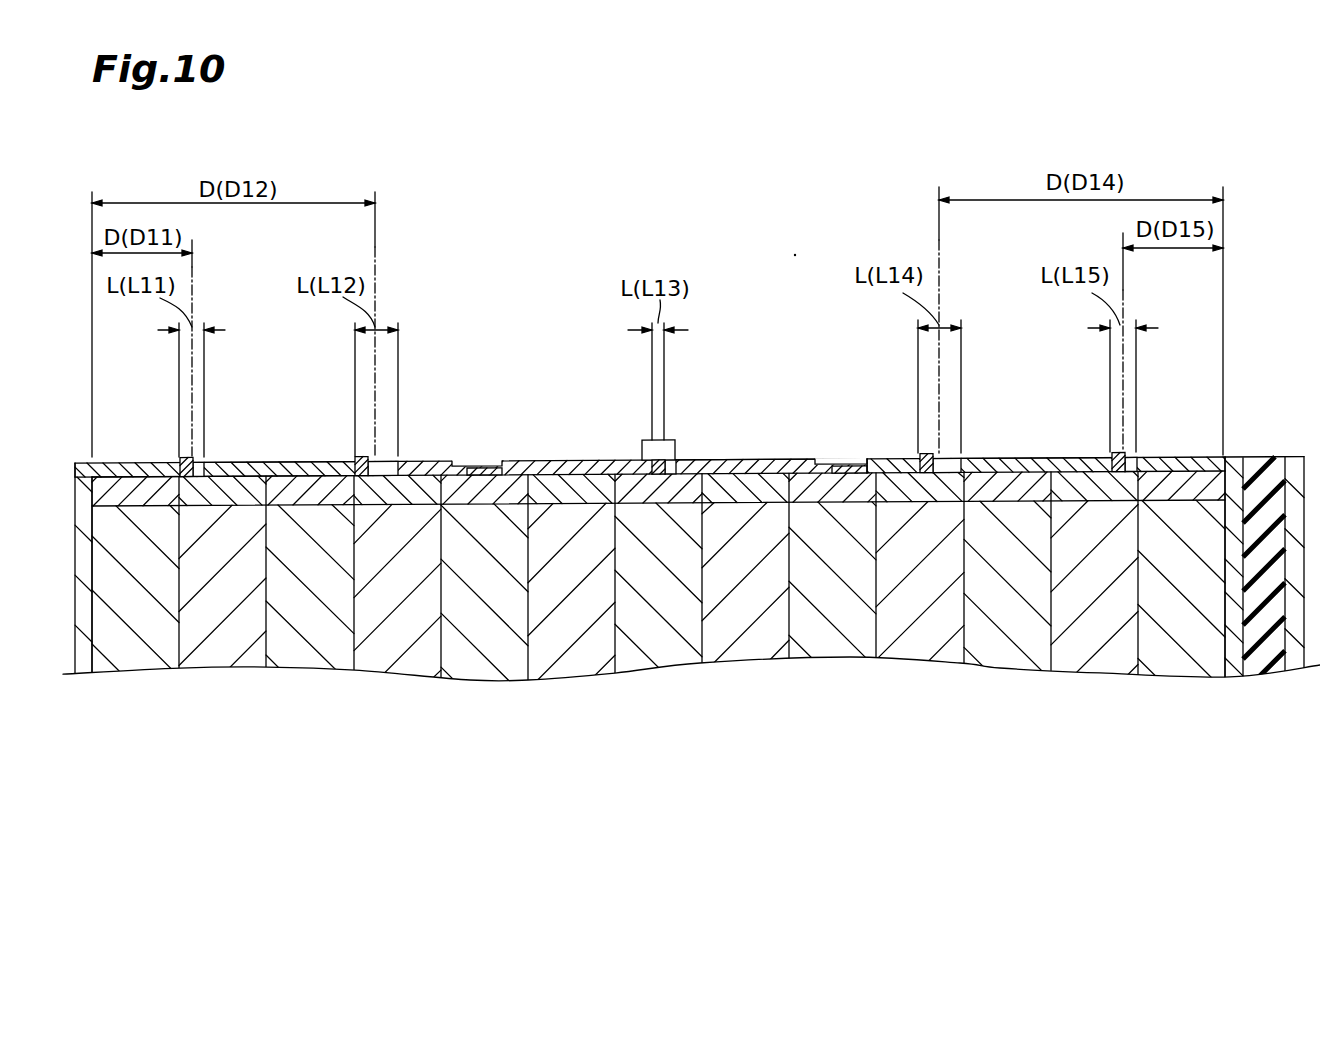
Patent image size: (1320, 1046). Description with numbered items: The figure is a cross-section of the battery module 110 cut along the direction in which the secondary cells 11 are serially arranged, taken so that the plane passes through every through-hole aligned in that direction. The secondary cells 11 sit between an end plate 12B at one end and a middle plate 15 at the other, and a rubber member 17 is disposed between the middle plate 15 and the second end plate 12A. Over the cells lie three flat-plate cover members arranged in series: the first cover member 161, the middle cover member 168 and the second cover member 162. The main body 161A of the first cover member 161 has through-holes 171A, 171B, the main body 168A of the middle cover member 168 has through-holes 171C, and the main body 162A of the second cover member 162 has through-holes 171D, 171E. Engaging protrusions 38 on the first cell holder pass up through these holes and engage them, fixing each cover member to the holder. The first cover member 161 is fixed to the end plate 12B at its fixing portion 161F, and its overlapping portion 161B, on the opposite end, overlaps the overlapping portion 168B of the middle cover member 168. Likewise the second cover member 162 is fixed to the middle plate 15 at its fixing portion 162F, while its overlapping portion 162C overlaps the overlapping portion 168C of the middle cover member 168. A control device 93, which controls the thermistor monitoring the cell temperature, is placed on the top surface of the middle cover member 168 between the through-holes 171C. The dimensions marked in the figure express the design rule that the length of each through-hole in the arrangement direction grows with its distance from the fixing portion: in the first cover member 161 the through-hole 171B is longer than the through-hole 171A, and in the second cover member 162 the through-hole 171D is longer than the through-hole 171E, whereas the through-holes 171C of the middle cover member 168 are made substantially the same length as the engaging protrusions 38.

The battery module 110 is at (1212, 156).
The secondary cell 11 is at (585, 660).
The end plate 12A is at (1294, 457).
The end plate 12B is at (85, 663).
The middle plate 15 is at (1235, 660).
The rubber member 17 is at (1272, 658).
The engaging protrusion 38 is at (185, 458).
The control device 93 is at (642, 452).
The first cover member 161 is at (270, 368).
The main body of the first cover member 161A is at (282, 461).
The overlapping portion of the first cover member 161B is at (484, 478).
The fixing portion of the first cover member 161F is at (92, 462).
The second cover member 162 is at (998, 378).
The main body of the second cover member 162A is at (1050, 457).
The overlapping portion of the second cover member 162C is at (858, 478).
The fixing portion of the second cover member 162F is at (1223, 457).
The middle cover member 168 is at (543, 403).
The main body of the middle cover member 168A is at (767, 459).
The overlapping portion of the middle cover member 168B is at (468, 461).
The overlapping portion of the middle cover member 168C is at (835, 462).
The through-hole 171A is at (200, 462).
The through-hole 171B is at (385, 461).
The through-hole 171C is at (676, 440).
The through-hole 171D is at (948, 461).
The through-hole 171E is at (1137, 461).